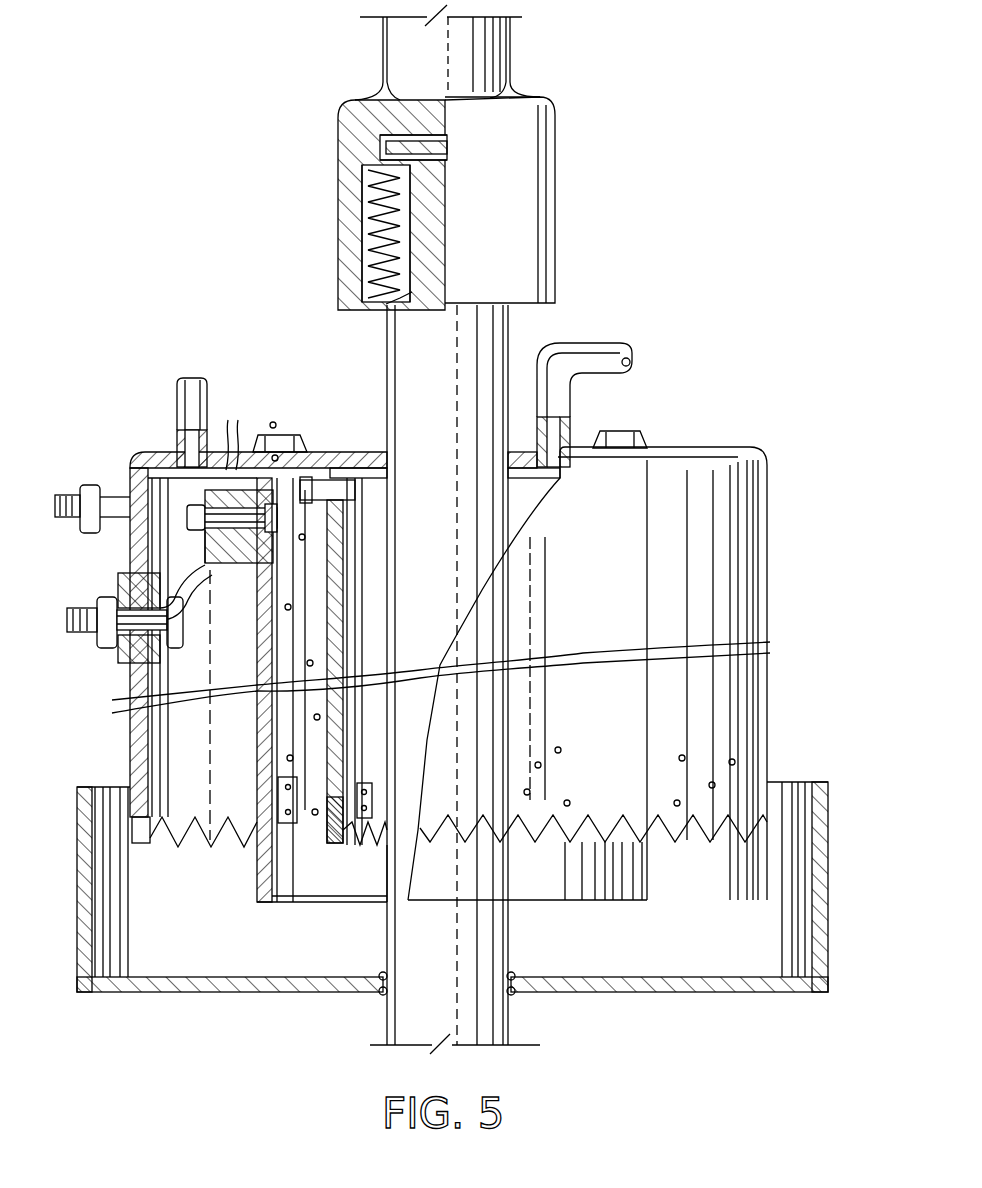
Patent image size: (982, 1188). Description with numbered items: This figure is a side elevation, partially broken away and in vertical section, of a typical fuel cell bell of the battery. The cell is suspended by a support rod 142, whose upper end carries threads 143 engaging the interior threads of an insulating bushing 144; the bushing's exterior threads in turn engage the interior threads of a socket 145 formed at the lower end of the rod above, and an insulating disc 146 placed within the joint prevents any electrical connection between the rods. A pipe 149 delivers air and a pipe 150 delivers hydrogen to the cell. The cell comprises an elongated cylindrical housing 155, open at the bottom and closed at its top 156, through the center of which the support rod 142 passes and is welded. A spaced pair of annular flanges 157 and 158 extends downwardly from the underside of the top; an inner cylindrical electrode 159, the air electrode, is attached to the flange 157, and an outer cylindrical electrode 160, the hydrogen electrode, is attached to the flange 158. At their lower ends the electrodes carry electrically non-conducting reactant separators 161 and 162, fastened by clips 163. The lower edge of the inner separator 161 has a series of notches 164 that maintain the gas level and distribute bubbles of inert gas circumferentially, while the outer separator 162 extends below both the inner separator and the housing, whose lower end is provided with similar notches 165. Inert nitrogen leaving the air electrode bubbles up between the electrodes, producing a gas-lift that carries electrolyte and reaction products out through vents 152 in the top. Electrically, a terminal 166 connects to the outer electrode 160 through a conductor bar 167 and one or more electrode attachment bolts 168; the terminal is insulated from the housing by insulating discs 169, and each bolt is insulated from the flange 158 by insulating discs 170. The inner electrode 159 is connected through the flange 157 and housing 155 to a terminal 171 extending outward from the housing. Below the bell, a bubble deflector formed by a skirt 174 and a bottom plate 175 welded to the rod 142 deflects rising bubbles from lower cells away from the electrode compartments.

The support rod 142 is at (397, 52).
The threads 143 is at (398, 301).
The insulating bushing 144 is at (375, 237).
The socket 145 is at (338, 192).
The insulating disc 146 is at (382, 148).
The pipe 149 is at (628, 367).
The pipe 150 is at (177, 405).
The vents 152 is at (290, 440).
The cylindrical housing 155 is at (768, 608).
The housing top 156 is at (333, 455).
The annular flange 157 is at (320, 540).
The annular flange 158 is at (255, 565).
The inner cylindrical electrode 159 is at (355, 553).
The outer cylindrical electrode 160 is at (257, 670).
The reactant separator 161 is at (325, 840).
The reactant separator 162 is at (257, 882).
The clips 163 is at (278, 770).
The notches 164 is at (377, 848).
The notches 165 is at (170, 843).
The electrical terminal 166 is at (80, 632).
The conductor bar 167 is at (207, 558).
The electrode attachment bolt 168 is at (207, 505).
The insulating discs 169 is at (130, 580).
The insulating discs 170 is at (234, 433).
The terminal 171 is at (77, 493).
The skirt 174 is at (830, 907).
The bottom plate 175 is at (670, 975).